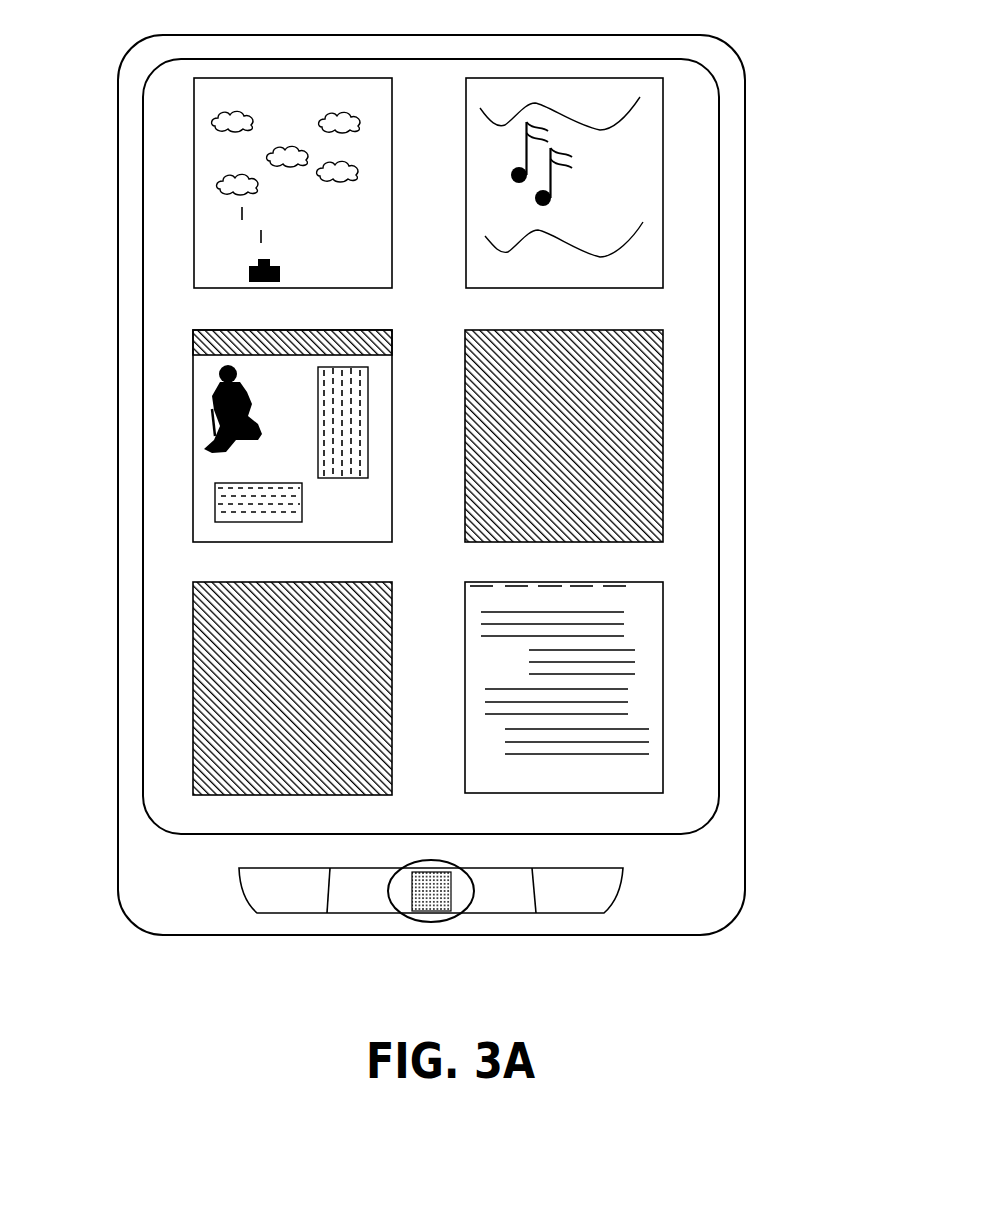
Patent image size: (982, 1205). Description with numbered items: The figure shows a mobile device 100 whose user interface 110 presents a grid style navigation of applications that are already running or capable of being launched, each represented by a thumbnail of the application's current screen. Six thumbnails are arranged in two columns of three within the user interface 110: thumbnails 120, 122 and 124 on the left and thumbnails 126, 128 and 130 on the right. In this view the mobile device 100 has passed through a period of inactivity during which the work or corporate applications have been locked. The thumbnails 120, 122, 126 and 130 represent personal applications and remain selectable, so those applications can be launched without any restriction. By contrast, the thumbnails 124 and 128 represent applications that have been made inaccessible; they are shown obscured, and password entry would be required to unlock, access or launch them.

The mobile device 100 is at (745, 865).
The user interface 110 is at (150, 786).
The application thumbnail 120 is at (208, 163).
The application thumbnail 122 is at (207, 423).
The application thumbnail 124 is at (208, 658).
The application thumbnail 126 is at (657, 159).
The application thumbnail 128 is at (658, 405).
The application thumbnail 130 is at (652, 649).